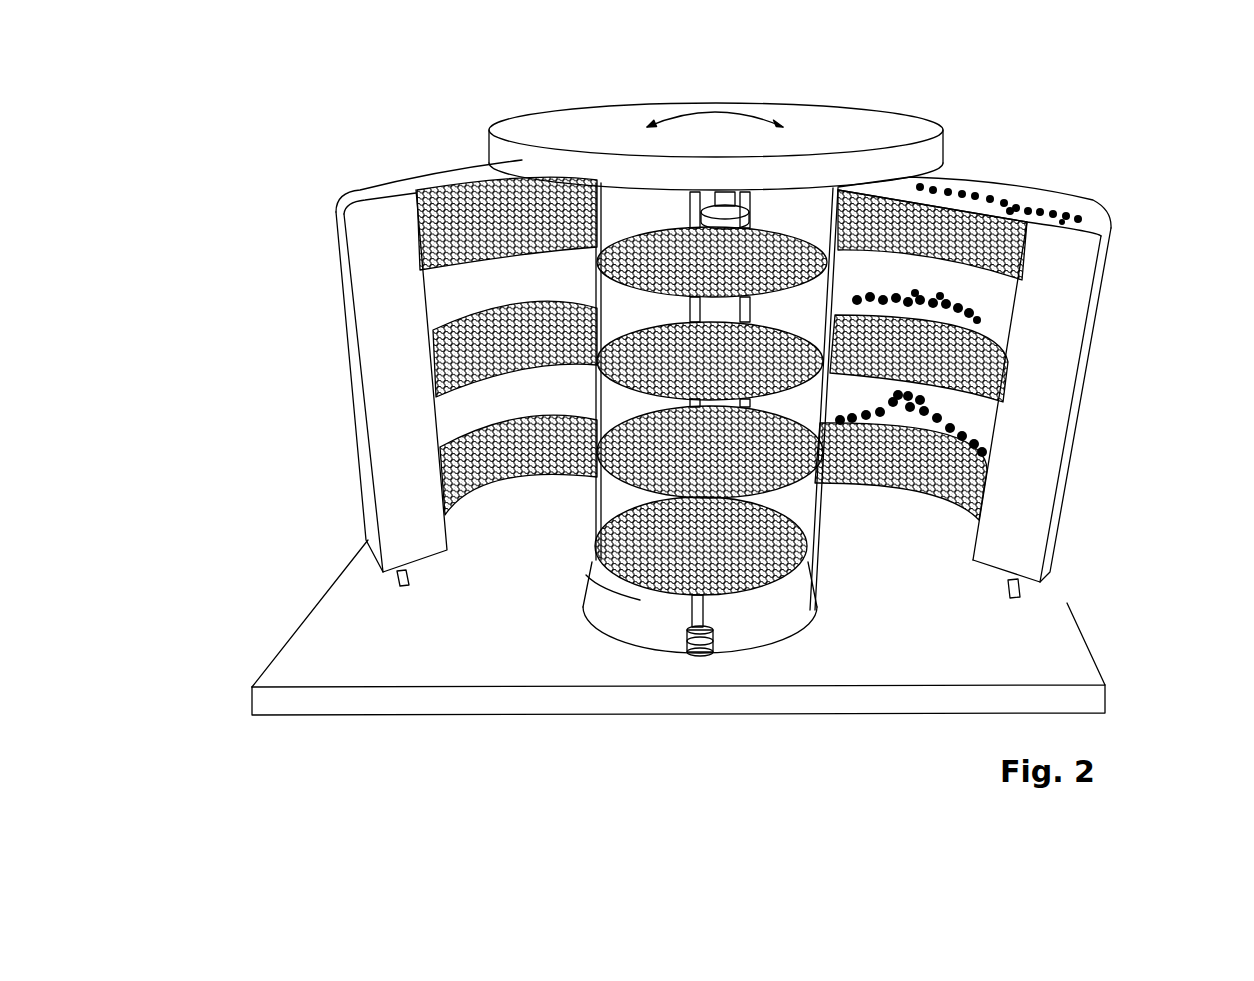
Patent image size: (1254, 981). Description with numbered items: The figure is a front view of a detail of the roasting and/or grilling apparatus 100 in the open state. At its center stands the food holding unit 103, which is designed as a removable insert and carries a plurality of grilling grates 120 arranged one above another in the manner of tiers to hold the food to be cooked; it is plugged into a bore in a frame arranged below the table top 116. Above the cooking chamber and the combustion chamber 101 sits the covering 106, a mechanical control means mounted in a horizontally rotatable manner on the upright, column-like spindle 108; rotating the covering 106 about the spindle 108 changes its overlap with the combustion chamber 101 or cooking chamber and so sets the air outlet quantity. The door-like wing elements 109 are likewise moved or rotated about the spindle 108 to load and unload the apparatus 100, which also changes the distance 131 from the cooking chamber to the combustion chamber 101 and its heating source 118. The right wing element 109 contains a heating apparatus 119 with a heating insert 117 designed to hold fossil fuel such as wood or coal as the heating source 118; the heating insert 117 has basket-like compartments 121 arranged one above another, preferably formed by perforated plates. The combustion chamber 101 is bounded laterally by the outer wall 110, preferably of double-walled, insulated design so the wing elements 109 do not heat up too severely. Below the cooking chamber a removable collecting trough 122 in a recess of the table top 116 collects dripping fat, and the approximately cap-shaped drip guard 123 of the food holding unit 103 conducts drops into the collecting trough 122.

The roasting and/or grilling apparatus 100 is at (372, 110).
The combustion chamber 101 is at (393, 193).
The food holding unit 103 is at (808, 510).
The covering 106 is at (863, 130).
The spindle 108 is at (727, 193).
The wing elements 109 is at (388, 408).
The outer wall 110 is at (338, 193).
The table top 116 is at (380, 654).
The heating insert 117 is at (1000, 385).
The heating source 118 is at (955, 303).
The heating apparatus 119 is at (963, 403).
The grilling grates 120 is at (750, 372).
The compartments 121 is at (430, 237).
The collecting trough 122 is at (623, 612).
The drip guard 123 is at (690, 633).
The distance 131 is at (597, 512).